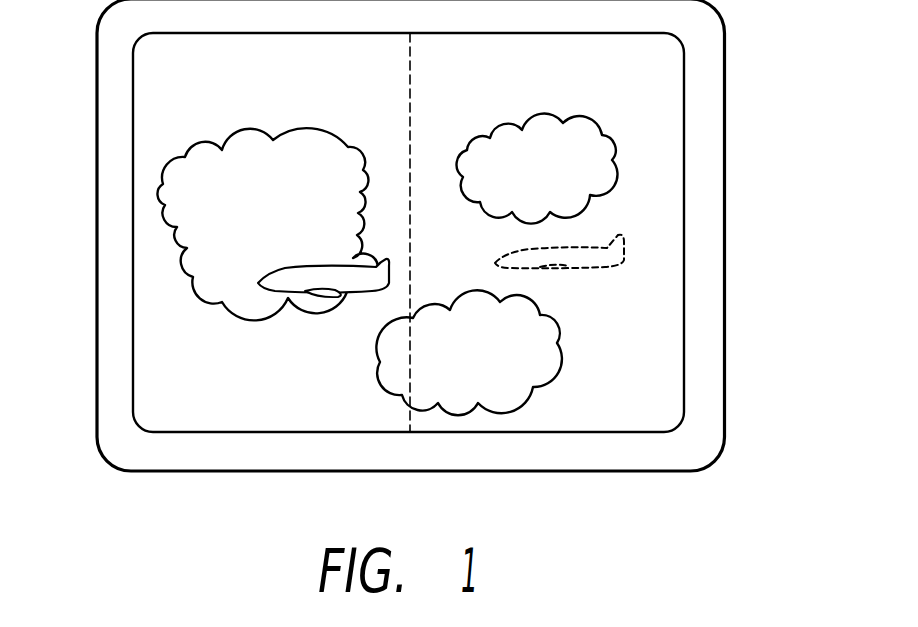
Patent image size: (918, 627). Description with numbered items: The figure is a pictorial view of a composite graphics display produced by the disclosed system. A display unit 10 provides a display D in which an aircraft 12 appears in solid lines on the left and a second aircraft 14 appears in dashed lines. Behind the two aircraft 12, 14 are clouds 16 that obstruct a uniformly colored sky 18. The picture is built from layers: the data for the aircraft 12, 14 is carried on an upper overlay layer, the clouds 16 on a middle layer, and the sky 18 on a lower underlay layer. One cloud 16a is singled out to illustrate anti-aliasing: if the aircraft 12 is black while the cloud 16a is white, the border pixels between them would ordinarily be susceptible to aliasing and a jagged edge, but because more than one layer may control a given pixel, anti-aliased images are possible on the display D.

The display unit 10 is at (723, 214).
The sky 18 is at (644, 95).
The clouds 16 is at (468, 291).
The cloud 16a is at (243, 138).
The aircraft 12 is at (348, 296).
The aircraft 14 is at (565, 268).
The display D is at (172, 122).